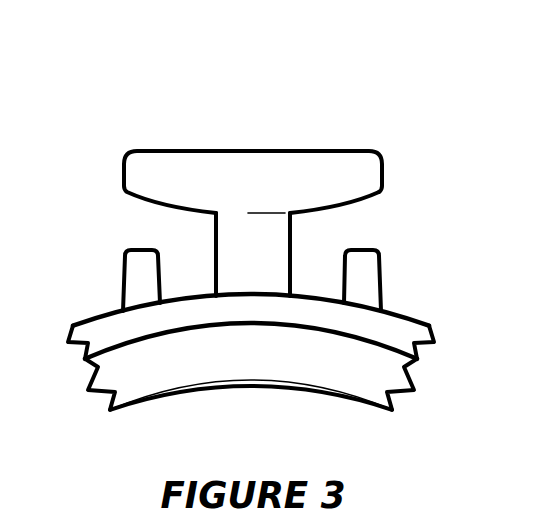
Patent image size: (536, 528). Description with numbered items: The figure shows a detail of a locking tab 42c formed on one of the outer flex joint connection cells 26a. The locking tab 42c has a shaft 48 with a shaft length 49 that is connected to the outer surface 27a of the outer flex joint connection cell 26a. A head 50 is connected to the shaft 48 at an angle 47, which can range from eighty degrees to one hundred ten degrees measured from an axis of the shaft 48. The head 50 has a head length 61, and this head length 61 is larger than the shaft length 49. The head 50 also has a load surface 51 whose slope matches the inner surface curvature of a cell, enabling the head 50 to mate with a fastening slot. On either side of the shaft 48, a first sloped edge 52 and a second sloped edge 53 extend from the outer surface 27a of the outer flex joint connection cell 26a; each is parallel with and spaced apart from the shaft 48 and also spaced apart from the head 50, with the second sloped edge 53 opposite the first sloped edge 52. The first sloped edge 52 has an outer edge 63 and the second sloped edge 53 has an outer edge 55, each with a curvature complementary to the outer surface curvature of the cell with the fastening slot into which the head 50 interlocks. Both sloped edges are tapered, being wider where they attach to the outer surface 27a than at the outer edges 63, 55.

The locking tab 42c is at (128, 63).
The head 50 is at (303, 150).
The load surface 51 is at (342, 216).
The shaft 48 is at (215, 277).
The angle 47 is at (320, 215).
The shaft length 49 is at (253, 215).
The head length 61 is at (124, 162).
The first sloped edge 52 is at (128, 249).
The outer edge 63 is at (148, 243).
The second sloped edge 53 is at (378, 248).
The outer edge 55 is at (359, 244).
The outer surface 27a is at (100, 310).
The outer flex joint connection cell 26a is at (406, 317).